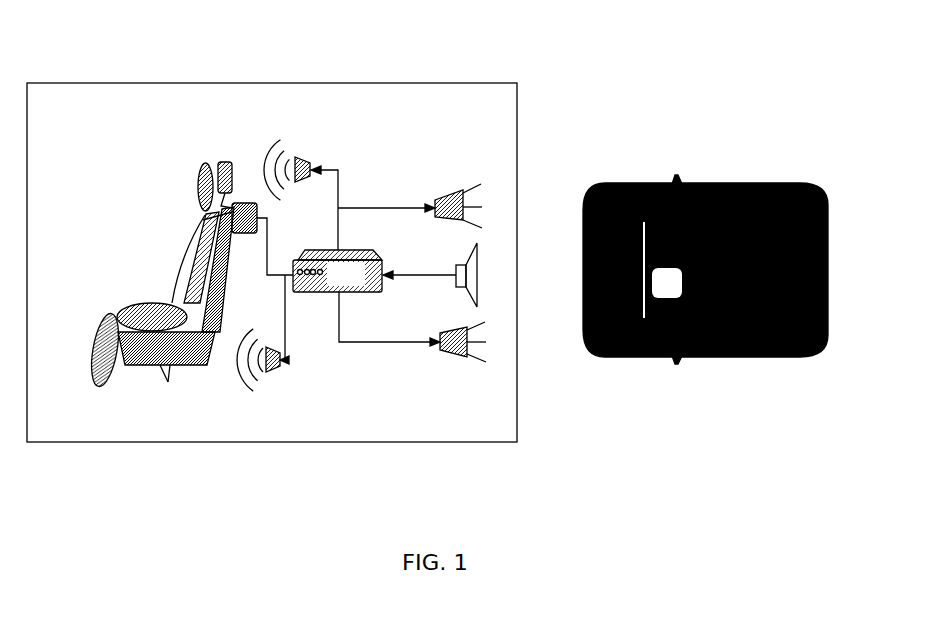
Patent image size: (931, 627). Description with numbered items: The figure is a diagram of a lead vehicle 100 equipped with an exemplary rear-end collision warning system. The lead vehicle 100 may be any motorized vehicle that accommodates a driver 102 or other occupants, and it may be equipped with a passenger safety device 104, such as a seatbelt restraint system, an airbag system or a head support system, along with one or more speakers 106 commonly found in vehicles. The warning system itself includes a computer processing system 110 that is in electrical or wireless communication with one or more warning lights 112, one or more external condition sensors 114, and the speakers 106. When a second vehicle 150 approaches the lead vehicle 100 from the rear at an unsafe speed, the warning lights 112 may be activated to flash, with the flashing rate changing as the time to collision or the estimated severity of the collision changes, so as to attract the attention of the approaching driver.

The lead vehicle 100 is at (228, 43).
The driver 102 is at (180, 197).
The passenger safety device 104 is at (220, 216).
The speakers 106 is at (346, 140).
The computer processing system 110 is at (358, 285).
The warning lights 112 is at (461, 173).
The external condition sensors 114 is at (492, 262).
The second vehicle 150 is at (708, 116).